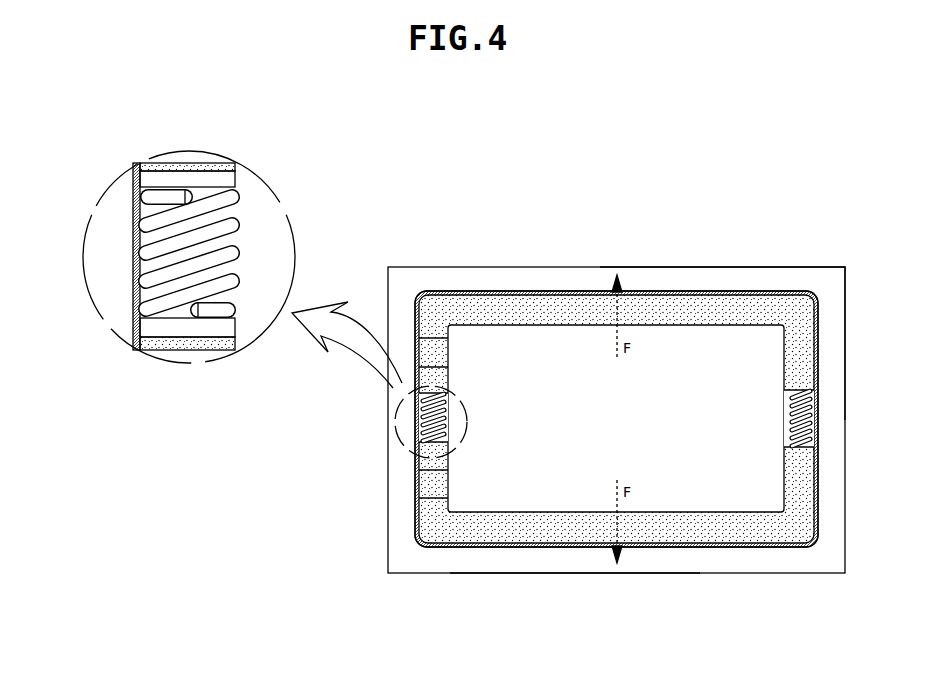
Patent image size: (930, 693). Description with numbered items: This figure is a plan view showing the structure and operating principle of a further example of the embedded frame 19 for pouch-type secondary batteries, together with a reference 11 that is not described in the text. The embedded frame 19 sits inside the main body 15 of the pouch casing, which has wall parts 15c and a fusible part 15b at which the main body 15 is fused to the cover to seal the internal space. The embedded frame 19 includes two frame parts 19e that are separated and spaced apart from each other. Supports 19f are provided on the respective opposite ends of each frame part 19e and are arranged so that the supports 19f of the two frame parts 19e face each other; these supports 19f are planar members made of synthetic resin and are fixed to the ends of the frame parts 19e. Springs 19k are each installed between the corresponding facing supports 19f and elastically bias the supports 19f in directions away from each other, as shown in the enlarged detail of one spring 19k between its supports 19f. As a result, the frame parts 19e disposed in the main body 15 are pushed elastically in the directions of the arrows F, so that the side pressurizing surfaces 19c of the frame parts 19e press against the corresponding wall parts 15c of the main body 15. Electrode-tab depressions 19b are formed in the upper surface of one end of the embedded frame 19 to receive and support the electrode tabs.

The display panel 11 is at (778, 254).
The main body 15 is at (483, 585).
The fusible part 15b is at (530, 562).
The wall parts 15c is at (563, 540).
The embedded frame 19 is at (728, 559).
The electrode-tab depressions 19b is at (421, 483).
The side pressurizing surfaces 19c is at (716, 295).
The frame parts 19e is at (560, 307).
The supports 19f is at (230, 187).
The springs 19k is at (414, 420).